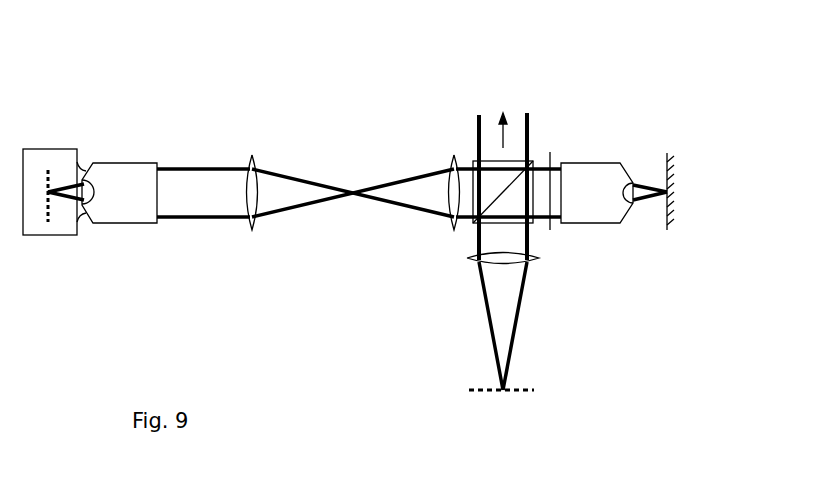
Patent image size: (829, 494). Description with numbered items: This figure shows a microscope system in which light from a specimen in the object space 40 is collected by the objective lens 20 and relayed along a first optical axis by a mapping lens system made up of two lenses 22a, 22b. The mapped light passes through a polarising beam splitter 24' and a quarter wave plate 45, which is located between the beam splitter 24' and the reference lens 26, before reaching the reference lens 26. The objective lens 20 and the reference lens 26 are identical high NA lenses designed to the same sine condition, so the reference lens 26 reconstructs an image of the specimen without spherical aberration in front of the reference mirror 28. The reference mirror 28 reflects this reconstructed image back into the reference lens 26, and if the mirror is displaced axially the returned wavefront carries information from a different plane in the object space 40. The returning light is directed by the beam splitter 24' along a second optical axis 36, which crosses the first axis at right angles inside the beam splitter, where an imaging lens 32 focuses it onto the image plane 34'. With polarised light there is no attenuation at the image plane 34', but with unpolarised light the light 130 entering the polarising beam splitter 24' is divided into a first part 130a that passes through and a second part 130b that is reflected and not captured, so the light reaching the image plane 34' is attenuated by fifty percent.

The objective lens 20 is at (118, 168).
The mapping lens 22a is at (250, 157).
The mapping lens 22b is at (455, 157).
The polarising beam splitter 24' is at (431, 248).
The reference lens 26 is at (613, 165).
The reference mirror 28 is at (673, 227).
The imaging lens 32 is at (539, 258).
The image plane 34' is at (501, 433).
The second optical axis 36 is at (500, 308).
The object space 40 is at (52, 232).
The quarter wave plate 45 is at (550, 227).
The light 130 is at (202, 218).
The first part of the light 130a is at (538, 163).
The second part of the light 130b is at (481, 116).